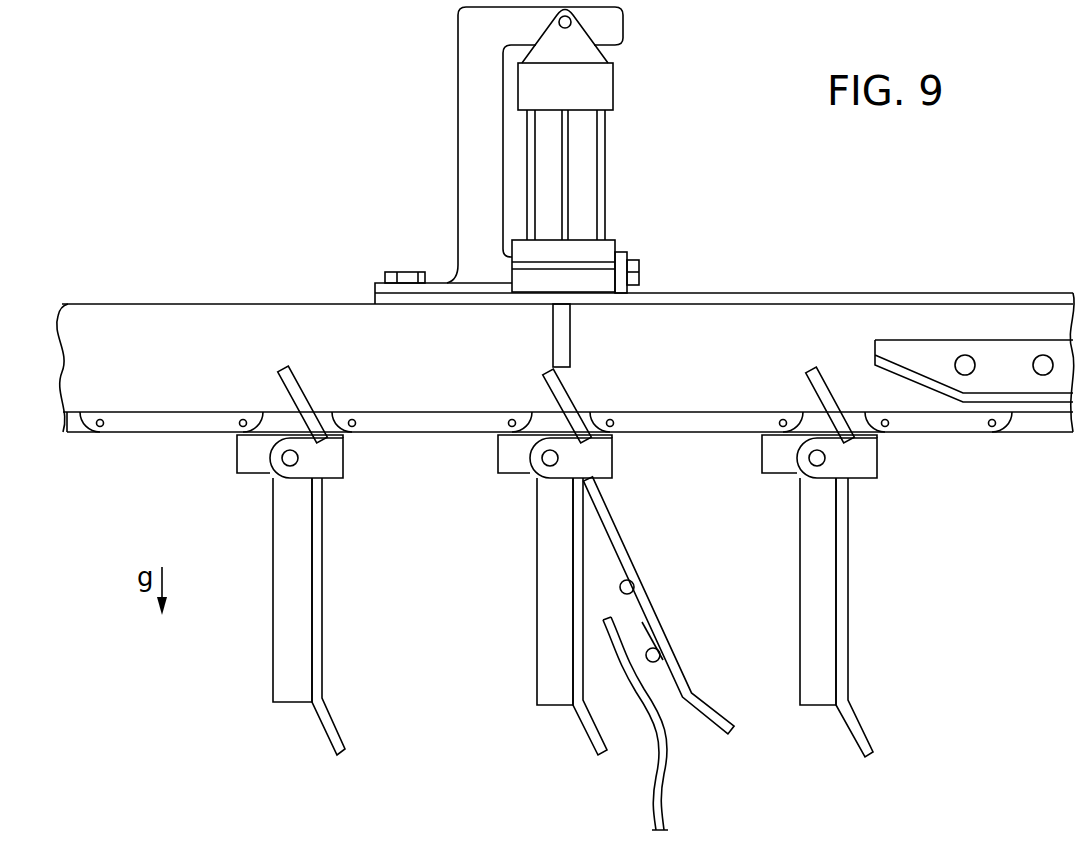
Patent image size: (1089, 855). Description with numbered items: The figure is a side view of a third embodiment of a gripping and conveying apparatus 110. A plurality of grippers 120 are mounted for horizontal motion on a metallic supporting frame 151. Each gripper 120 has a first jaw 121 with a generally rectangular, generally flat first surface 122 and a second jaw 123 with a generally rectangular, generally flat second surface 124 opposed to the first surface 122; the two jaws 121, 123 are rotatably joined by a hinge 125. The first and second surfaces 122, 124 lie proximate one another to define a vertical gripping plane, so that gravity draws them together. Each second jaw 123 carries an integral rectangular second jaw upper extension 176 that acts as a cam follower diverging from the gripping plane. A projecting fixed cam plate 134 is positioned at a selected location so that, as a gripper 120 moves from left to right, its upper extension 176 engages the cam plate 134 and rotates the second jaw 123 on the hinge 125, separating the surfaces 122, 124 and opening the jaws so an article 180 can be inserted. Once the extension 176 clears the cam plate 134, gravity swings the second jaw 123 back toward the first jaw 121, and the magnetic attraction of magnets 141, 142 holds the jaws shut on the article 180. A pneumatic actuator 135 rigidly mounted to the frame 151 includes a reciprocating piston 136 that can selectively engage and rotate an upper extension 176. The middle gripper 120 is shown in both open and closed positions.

The gripping and conveying apparatus 110 is at (273, 42).
The metallic supporting frame 151 is at (134, 370).
The pneumatic actuator 135 is at (477, 103).
The reciprocating piston 136 is at (572, 338).
The fixed cam plate 134 is at (920, 365).
The second jaw upper extension 176 is at (298, 390).
The hinge 125 is at (541, 458).
The gripper 120 is at (612, 616).
The first jaw 121 is at (558, 598).
The first surface 122 is at (573, 548).
The magnet 141 is at (573, 654).
The second jaw 123 is at (631, 555).
The second surface 124 is at (640, 595).
The magnet 142 is at (661, 658).
The article 180 is at (668, 800).